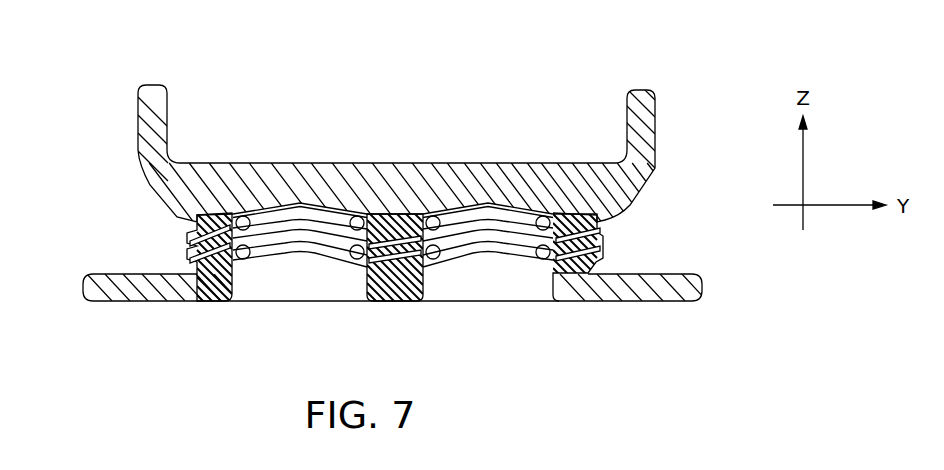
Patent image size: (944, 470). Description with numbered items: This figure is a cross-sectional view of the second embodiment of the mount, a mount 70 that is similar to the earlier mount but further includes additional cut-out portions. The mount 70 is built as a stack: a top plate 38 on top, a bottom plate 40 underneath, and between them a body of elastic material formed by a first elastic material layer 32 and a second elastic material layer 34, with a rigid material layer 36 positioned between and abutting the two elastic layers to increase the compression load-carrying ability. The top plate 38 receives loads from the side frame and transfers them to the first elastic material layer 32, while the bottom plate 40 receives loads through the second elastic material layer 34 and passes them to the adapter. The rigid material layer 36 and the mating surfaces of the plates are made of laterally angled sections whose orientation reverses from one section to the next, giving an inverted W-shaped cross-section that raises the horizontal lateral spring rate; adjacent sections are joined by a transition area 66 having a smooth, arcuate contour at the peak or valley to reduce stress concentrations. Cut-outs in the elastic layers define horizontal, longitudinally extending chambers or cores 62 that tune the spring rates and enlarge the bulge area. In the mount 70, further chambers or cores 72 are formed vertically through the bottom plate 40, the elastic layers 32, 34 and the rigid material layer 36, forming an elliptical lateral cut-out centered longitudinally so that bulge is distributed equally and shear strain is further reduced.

The mount 70 is at (181, 60).
The chambers or cores 72 is at (303, 207).
The top plate 38 is at (655, 168).
The bottom plate 40 is at (662, 298).
The first elastic material layer 32 is at (193, 233).
The second elastic material layer 34 is at (193, 262).
The rigid material layer 36 is at (603, 250).
The transition area 66 is at (294, 265).
The chamber or core 62 is at (543, 256).